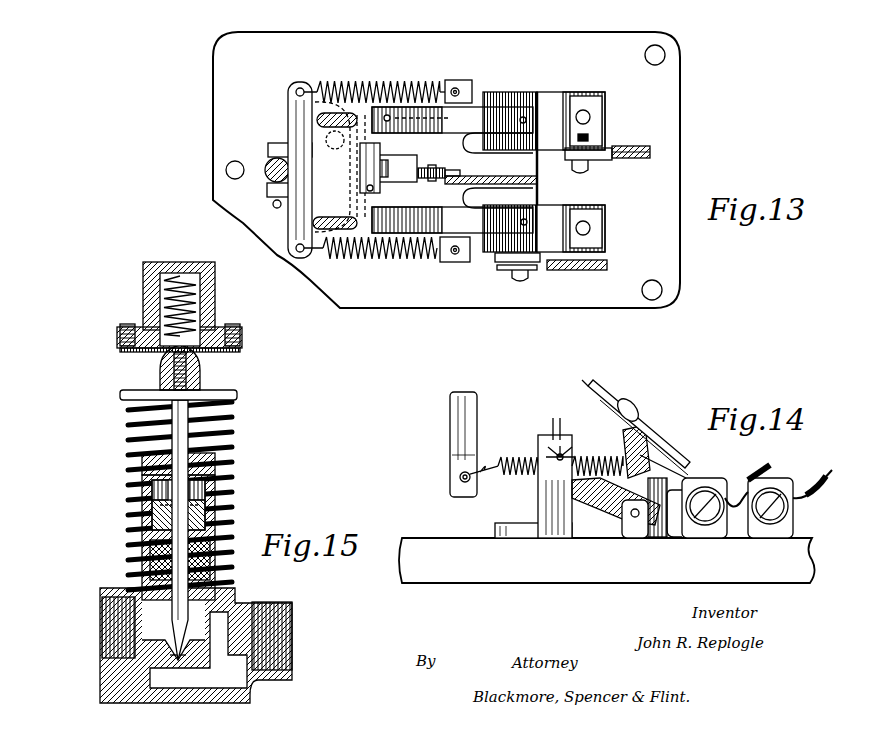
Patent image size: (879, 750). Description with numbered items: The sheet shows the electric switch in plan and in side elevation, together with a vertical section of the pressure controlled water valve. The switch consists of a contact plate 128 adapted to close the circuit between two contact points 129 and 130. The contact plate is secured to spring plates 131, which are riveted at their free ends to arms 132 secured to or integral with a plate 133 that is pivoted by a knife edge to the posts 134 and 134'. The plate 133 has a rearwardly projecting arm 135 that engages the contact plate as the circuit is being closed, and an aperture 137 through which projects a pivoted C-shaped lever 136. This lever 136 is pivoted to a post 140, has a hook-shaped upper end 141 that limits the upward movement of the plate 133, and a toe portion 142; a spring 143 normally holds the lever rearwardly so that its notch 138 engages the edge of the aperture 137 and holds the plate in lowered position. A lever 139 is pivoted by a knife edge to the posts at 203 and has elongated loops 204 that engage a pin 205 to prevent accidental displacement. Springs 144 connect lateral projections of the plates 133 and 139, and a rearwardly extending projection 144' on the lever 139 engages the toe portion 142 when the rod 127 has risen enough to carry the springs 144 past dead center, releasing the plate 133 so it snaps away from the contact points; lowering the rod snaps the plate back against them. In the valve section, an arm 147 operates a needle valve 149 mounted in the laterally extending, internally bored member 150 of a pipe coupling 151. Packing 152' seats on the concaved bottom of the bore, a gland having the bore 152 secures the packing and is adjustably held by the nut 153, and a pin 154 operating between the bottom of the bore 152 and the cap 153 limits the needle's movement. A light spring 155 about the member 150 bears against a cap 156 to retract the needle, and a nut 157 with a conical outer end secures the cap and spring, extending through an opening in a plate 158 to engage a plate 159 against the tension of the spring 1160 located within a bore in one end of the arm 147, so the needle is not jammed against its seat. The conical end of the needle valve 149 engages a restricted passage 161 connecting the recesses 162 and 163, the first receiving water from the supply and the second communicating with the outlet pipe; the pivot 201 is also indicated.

In FIG. 13, the rod 127 is at (267, 163).
In FIG. 14, the rod 127 is at (452, 436).
In FIG. 13, the contact plate 128 is at (518, 100).
In FIG. 14, the contact plate 128 is at (685, 478).
In FIG. 13, the contact point 129 is at (543, 133).
In FIG. 14, the contact point 129 is at (735, 490).
In FIG. 13, the contact point 130 is at (540, 220).
In FIG. 14, the contact point 130 is at (667, 520).
In FIG. 13, the spring plates 131 is at (462, 118).
In FIG. 14, the spring plates 131 is at (650, 442).
In FIG. 14, the arms 132 is at (635, 420).
In FIG. 13, the plate 133 is at (430, 140).
In FIG. 14, the plate 133 is at (582, 452).
In FIG. 13, the post 134 is at (380, 261).
In FIG. 14, the post 134 is at (533, 486).
In FIG. 13, the post 134' is at (378, 82).
In FIG. 13, the rearwardly projecting arm 135 is at (530, 177).
In FIG. 13, the C-shaped lever 136 is at (437, 168).
In FIG. 14, the C-shaped lever 136 is at (633, 442).
In FIG. 13, the aperture 137 is at (460, 172).
In FIG. 14, the notch 138 is at (643, 467).
In FIG. 13, the lever 139 is at (298, 115).
In FIG. 14, the lever 139 is at (475, 470).
In FIG. 14, the post 140 is at (633, 525).
In FIG. 14, the hook-shaped upper end 141 is at (625, 403).
In FIG. 14, the toe portion 142 is at (590, 488).
In FIG. 14, the spring 143 is at (658, 527).
In FIG. 13, the springs 144 is at (425, 169).
In FIG. 14, the springs 144 is at (511, 480).
In FIG. 13, the rearwardly extending projection 144' is at (395, 171).
In FIG. 14, the rearwardly extending projection 144' is at (585, 390).
In FIG. 15, the arm 147 is at (148, 263).
In FIG. 15, the needle valve 149 is at (182, 450).
In FIG. 15, the internally bored member 150 is at (217, 547).
In FIG. 15, the pipe coupling 151 is at (252, 603).
In FIG. 15, the bore 152 is at (141, 518).
In FIG. 15, the packing 152' is at (143, 560).
In FIG. 15, the nut 153 is at (140, 483).
In FIG. 15, the pin 154 is at (193, 500).
In FIG. 15, the light spring 155 is at (227, 417).
In FIG. 15, the cap 156 is at (230, 393).
In FIG. 15, the nut 157 is at (162, 363).
In FIG. 15, the plate 158 is at (125, 347).
In FIG. 15, the plate 159 is at (178, 340).
In FIG. 15, the spring 1160 is at (193, 283).
In FIG. 15, the restricted passage 161 is at (183, 665).
In FIG. 15, the recess 162 is at (228, 645).
In FIG. 15, the recess 163 is at (150, 622).
In FIG. 14, the pivot pin 201 is at (560, 460).
In FIG. 14, the knife-edge pivot 203 is at (563, 450).
In FIG. 13, the elongated loops 204 is at (372, 148).
In FIG. 13, the pin 205 is at (390, 88).
In FIG. 14, the pin 205 is at (540, 477).